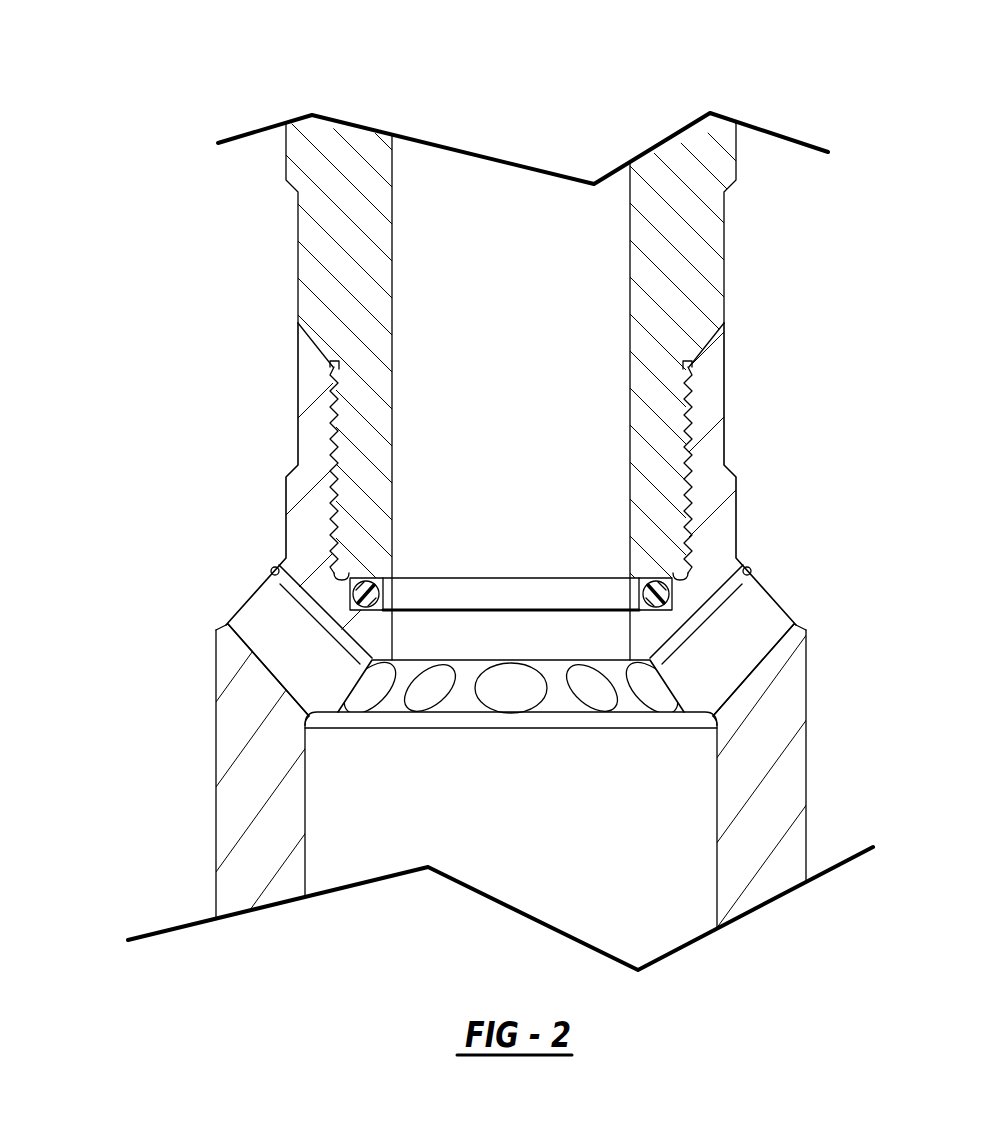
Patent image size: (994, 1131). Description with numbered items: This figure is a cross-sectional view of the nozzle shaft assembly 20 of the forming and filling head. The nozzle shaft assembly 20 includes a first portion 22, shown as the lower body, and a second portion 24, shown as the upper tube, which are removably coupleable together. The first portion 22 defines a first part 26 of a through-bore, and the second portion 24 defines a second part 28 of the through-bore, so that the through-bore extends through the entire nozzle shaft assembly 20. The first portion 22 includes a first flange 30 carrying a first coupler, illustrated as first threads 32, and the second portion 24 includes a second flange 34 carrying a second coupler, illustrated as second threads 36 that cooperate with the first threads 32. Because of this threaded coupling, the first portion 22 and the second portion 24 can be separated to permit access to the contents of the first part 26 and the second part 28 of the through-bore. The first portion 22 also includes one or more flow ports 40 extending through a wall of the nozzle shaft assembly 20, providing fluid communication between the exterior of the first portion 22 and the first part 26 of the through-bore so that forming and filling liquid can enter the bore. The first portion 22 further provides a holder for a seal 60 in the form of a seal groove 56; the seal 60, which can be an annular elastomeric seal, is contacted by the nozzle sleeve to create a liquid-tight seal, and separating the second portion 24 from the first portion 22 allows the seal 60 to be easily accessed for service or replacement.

The nozzle shaft assembly 20 is at (147, 209).
The first portion 22 is at (263, 803).
The second portion 24 is at (333, 263).
The first part of the through-bore 26 is at (717, 868).
The second part of the through-bore 28 is at (630, 231).
The first flange 30 is at (302, 448).
The first threads 32 is at (336, 410).
The second flange 34 is at (378, 421).
The second threads 36 is at (336, 397).
The flow ports 40 is at (252, 650).
The seal groove 56 is at (345, 588).
The seal 60 is at (367, 580).